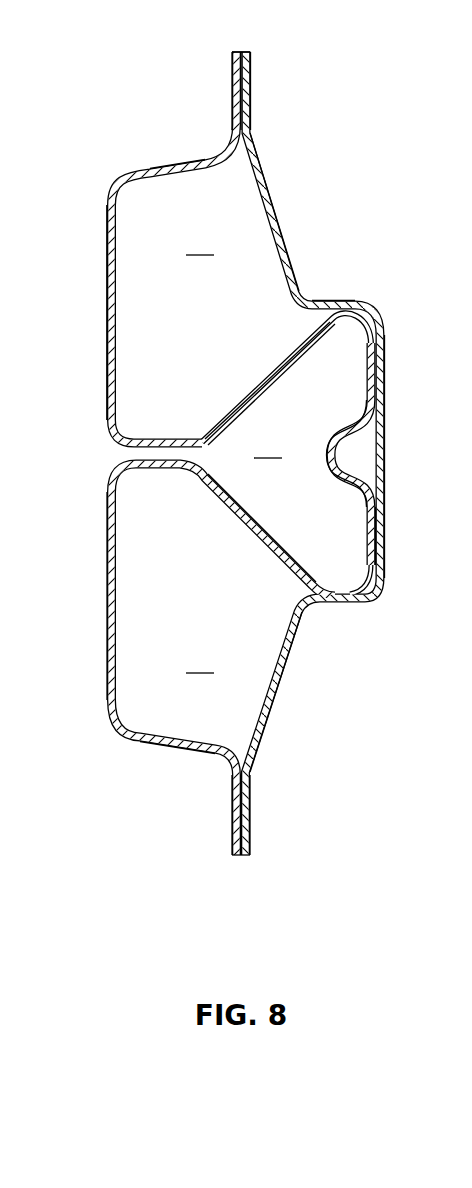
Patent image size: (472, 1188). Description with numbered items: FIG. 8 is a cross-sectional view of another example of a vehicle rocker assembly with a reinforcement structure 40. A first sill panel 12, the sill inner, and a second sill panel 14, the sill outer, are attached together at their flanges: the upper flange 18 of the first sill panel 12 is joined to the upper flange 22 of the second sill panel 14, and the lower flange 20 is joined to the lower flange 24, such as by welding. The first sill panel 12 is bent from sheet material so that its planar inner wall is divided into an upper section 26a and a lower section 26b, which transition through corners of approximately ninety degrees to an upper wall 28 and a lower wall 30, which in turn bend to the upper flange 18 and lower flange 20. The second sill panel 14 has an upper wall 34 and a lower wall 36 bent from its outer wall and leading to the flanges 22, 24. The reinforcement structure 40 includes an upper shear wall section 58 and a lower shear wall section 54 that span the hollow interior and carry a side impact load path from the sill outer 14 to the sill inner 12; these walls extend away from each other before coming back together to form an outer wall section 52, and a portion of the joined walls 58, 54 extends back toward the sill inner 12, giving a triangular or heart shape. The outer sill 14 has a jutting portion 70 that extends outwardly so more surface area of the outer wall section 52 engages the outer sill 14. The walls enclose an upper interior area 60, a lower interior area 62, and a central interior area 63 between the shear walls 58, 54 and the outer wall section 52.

The first sill panel 12 is at (106, 178).
The second sill panel 14 is at (312, 247).
The upper flange 18 is at (232, 76).
The lower flange 20 is at (232, 820).
The upper flange 22 is at (250, 92).
The lower flange 24 is at (250, 806).
The upper section 26a is at (107, 291).
The lower section 26b is at (107, 575).
The upper wall 28 is at (181, 163).
The lower wall 30 is at (172, 747).
The upper wall 34 is at (275, 199).
The lower wall 36 is at (280, 686).
The reinforcement structure 40 is at (225, 392).
The outer wall section 52 is at (360, 375).
The lower shear wall section 54 is at (268, 546).
The upper shear wall section 58 is at (258, 368).
The upper interior area 60 is at (200, 243).
The lower interior area 62 is at (200, 661).
The central interior area 63 is at (268, 446).
The jutting portion 70 is at (344, 304).